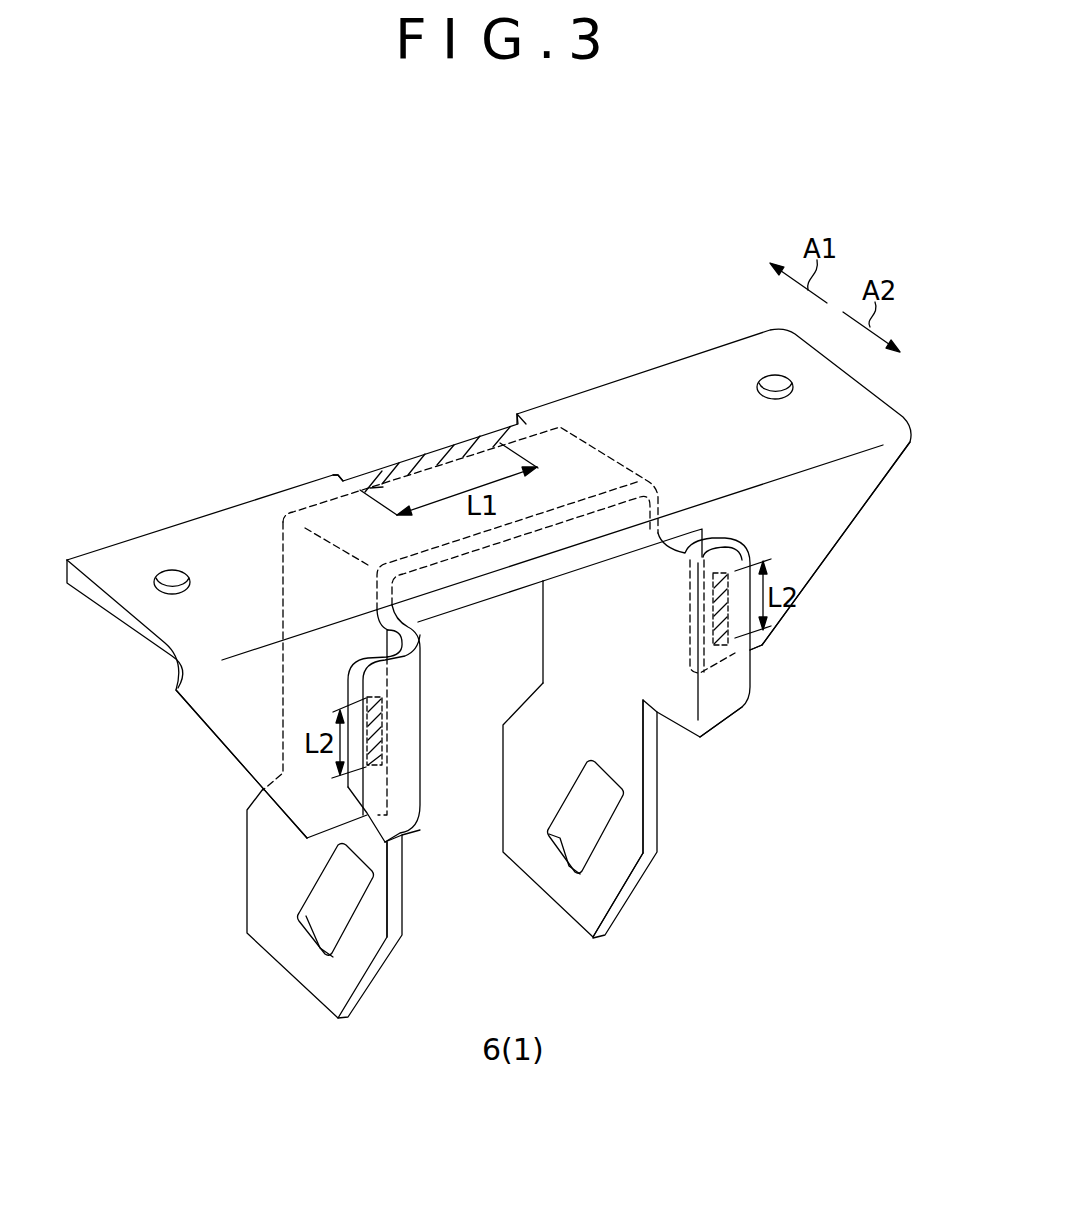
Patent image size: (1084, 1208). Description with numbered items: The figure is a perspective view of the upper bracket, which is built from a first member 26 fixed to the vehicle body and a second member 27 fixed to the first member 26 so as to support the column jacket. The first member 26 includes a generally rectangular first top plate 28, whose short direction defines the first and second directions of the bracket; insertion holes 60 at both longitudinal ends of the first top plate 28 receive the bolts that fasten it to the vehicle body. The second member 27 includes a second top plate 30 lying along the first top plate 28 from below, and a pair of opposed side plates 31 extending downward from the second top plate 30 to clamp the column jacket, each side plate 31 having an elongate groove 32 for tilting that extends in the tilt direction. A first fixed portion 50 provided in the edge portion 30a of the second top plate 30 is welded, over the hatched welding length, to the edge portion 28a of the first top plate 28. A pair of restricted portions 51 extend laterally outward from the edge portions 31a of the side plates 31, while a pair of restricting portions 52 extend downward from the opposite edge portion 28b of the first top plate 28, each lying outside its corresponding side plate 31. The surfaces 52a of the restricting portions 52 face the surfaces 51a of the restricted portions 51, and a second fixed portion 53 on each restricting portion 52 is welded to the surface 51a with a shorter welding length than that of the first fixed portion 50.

The first member 26 is at (650, 367).
The second member 27 is at (633, 904).
The first top plate 28 is at (267, 514).
The edge portion 28a is at (477, 442).
The edge portion 28b is at (470, 596).
The second top plate 30 is at (583, 463).
The edge portion 30a is at (350, 515).
The side plates 31 is at (263, 883).
The edge portions 31a is at (367, 840).
The elongate groove 32 is at (302, 932).
The first fixed portion 50 is at (405, 468).
The restricted portions 51 is at (395, 806).
The first-direction-side surfaces 51a is at (383, 810).
The restricting portions 52 is at (240, 708).
The second-direction-side surfaces 52a is at (327, 802).
The second fixed portion 53 is at (390, 735).
The insertion holes 60 is at (170, 577).